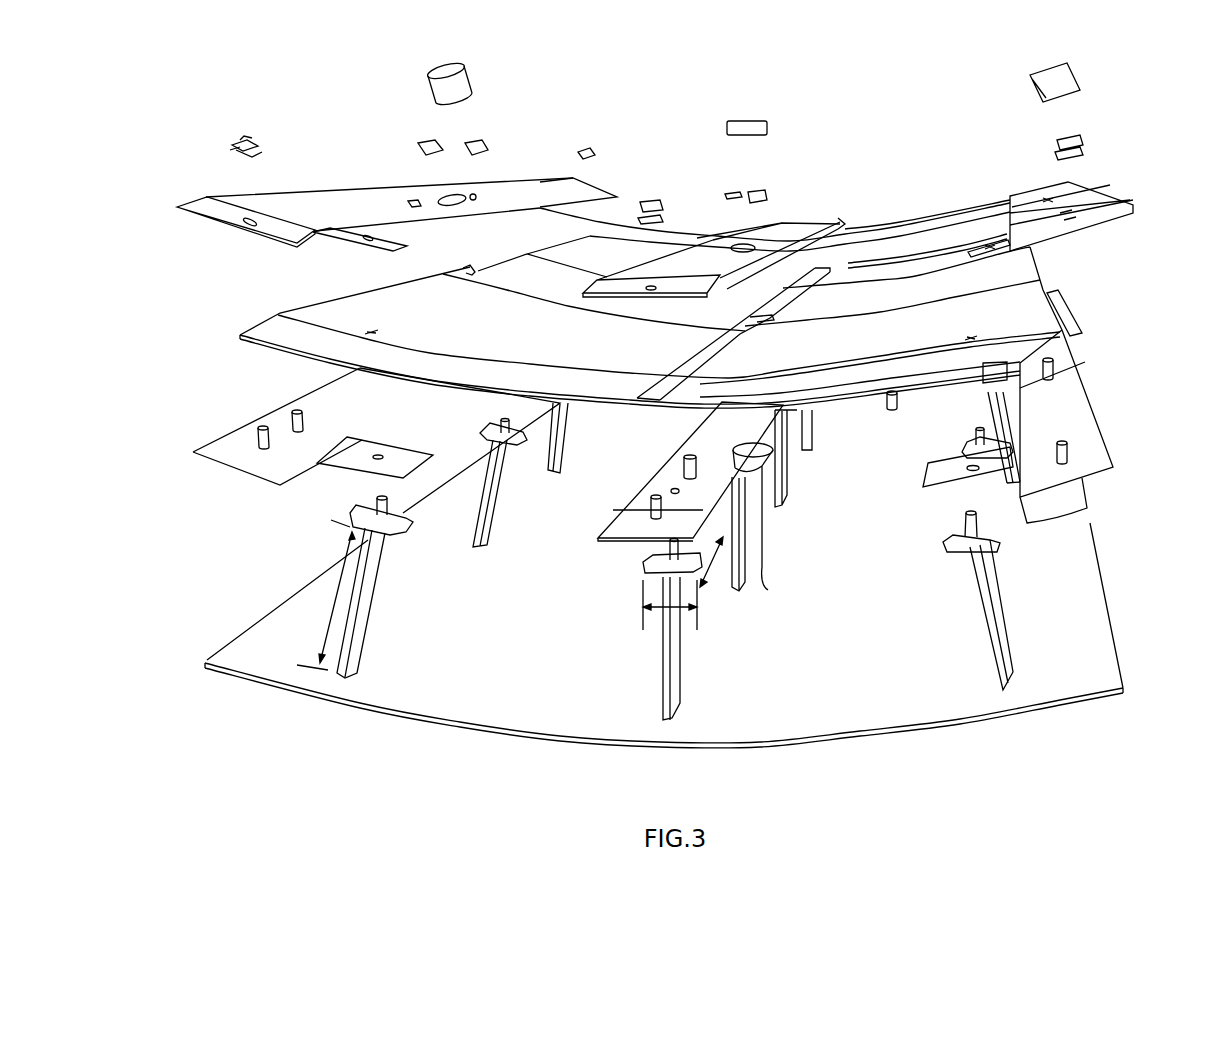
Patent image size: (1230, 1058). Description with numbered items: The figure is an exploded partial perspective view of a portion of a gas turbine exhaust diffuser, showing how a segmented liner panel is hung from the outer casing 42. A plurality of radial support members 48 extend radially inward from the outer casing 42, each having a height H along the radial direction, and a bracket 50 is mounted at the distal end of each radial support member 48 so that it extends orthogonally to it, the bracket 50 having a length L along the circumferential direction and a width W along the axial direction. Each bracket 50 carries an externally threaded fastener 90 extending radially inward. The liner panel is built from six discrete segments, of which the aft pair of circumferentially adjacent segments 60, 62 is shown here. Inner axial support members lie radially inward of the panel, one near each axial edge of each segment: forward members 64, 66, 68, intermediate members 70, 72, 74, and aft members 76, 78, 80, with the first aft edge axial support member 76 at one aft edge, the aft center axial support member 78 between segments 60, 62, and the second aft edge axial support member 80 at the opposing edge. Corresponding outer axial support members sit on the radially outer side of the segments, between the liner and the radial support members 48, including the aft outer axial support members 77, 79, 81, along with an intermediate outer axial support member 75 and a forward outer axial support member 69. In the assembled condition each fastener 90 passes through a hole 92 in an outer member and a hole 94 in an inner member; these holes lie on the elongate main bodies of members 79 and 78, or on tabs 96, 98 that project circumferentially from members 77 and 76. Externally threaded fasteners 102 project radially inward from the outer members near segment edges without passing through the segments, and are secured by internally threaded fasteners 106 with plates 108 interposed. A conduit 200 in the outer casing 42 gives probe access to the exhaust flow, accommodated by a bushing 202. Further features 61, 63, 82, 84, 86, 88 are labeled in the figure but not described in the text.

The outer casing 42 is at (1088, 675).
The radial support member 48 is at (475, 527).
The bracket 50 is at (518, 445).
The aft segment 60 is at (538, 345).
The slot 61 is at (366, 335).
The aft segment 62 is at (873, 351).
The slot 63 is at (968, 338).
The first forward edge axial support member 64 is at (585, 185).
The forward center axial support member 66 is at (836, 222).
The second forward edge axial support member 68 is at (1062, 187).
The forward outer axial support member 69 is at (1060, 318).
The first intermediate edge axial support member 70 is at (460, 196).
The intermediate center axial support member 72 is at (697, 240).
The second intermediate edge axial support member 74 is at (1077, 195).
The intermediate outer axial support member 75 is at (1075, 357).
The first aft edge axial support member 76 is at (250, 205).
The first aft edge outer axial support member 77 is at (275, 423).
The aft center axial support member 78 is at (645, 276).
The aft center outer axial support member 79 is at (660, 488).
The second aft edge axial support member 80 is at (1100, 200).
The aft outer axial support member 81 is at (1085, 420).
The center strip 82 is at (697, 230).
The right band 84 is at (893, 229).
The left band 86 is at (557, 240).
The inner band 88 is at (873, 250).
The threaded fastener 90 is at (503, 426).
The hole 92 is at (380, 457).
The hole 94 is at (375, 238).
The tab 96 is at (402, 465).
The tab 98 is at (376, 252).
The externally threaded fastener 102 is at (290, 418).
The internally threaded fastener 106 is at (247, 132).
The plate 108 is at (233, 142).
The conduit 200 is at (760, 575).
The bushing 202 is at (452, 78).
The height H is at (326, 595).
The width W is at (710, 572).
The length L is at (666, 612).